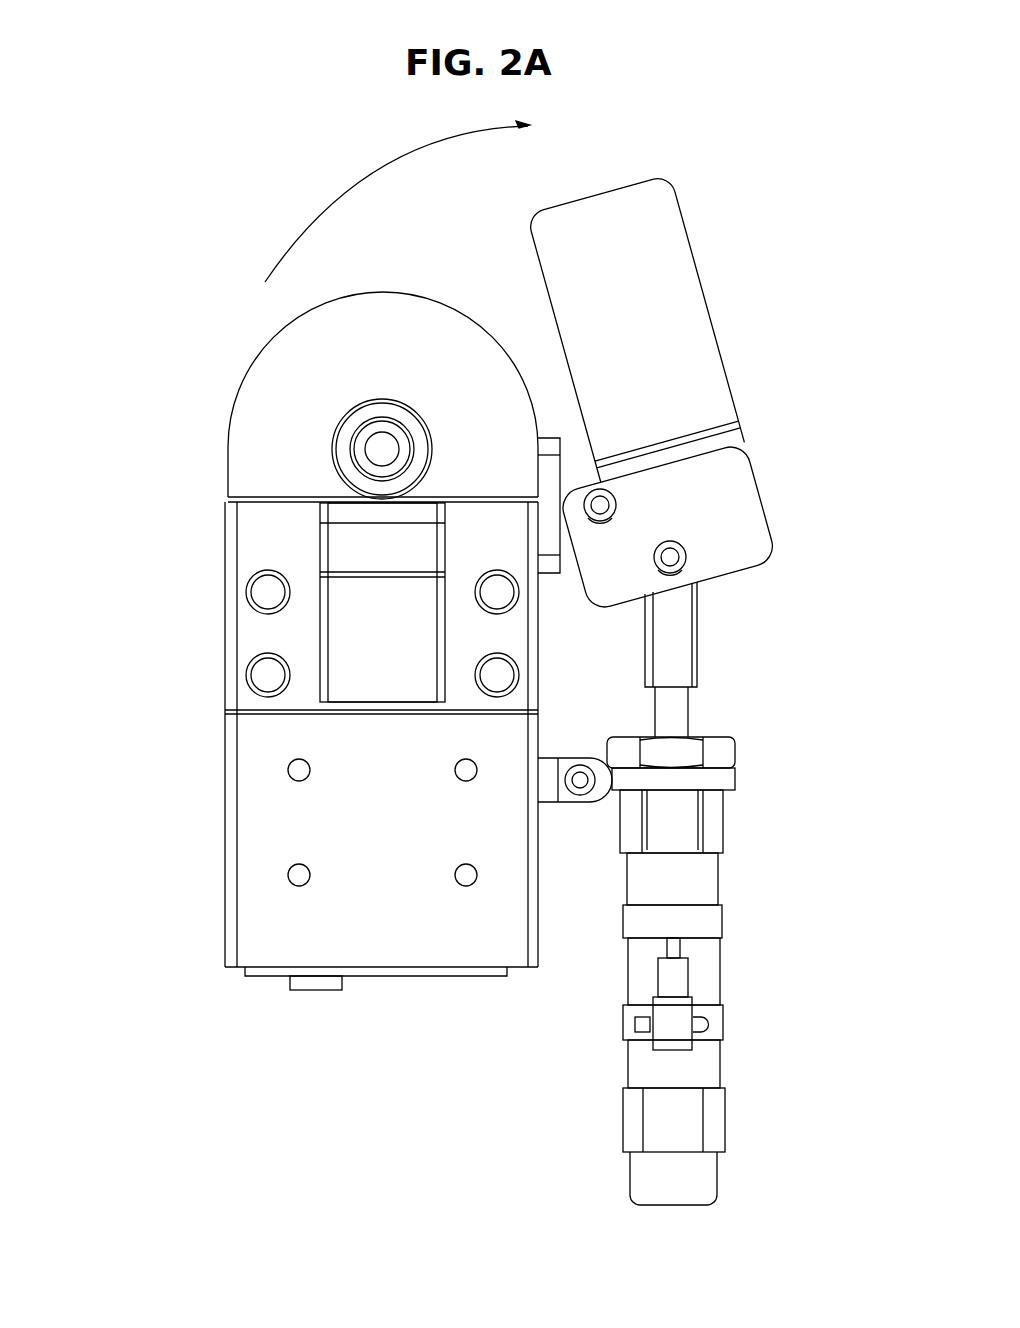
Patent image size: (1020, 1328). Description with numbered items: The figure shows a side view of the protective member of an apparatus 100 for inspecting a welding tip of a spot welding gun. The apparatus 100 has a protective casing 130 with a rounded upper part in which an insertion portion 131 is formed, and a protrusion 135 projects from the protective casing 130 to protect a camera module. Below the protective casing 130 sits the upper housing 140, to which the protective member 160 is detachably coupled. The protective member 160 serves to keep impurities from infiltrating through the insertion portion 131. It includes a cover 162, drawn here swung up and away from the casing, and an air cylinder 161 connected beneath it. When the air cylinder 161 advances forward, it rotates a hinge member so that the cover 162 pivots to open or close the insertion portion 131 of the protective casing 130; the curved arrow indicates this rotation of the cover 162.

The apparatus for inspecting a welding tip of a spot welding gun 100 is at (74, 155).
The protective casing 130 is at (260, 425).
The insertion portion 131 is at (375, 449).
The protrusion 135 is at (355, 615).
The upper housing 140 is at (252, 898).
The protective member 160 is at (722, 272).
The air cylinder 161 is at (680, 657).
The cover 162 is at (667, 526).